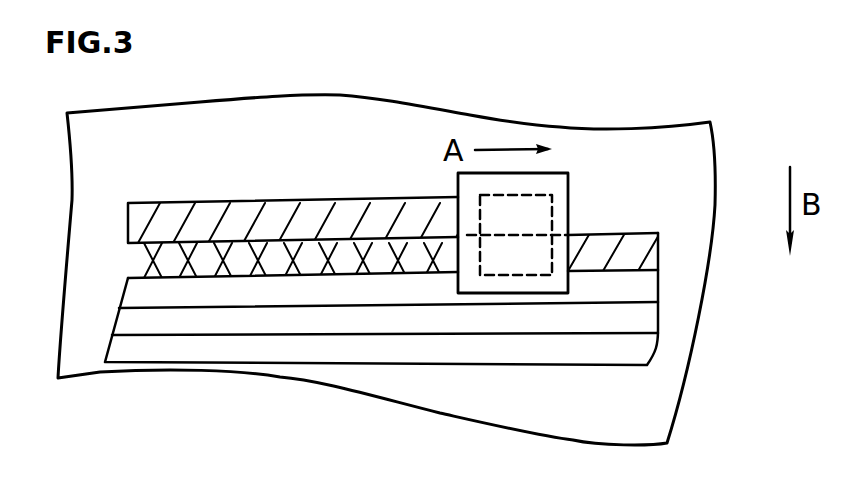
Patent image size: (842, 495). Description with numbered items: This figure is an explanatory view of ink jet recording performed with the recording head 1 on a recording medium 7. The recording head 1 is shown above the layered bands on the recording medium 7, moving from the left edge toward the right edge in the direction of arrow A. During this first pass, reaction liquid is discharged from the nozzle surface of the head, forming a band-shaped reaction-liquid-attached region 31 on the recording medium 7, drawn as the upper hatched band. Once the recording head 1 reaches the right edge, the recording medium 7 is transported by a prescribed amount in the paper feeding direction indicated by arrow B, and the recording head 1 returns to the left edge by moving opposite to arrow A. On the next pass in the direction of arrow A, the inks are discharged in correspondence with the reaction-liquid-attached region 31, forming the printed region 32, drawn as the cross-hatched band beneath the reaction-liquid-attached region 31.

The recording head 1 is at (560, 180).
The recording medium 7 is at (662, 413).
The reaction-liquid-attached region 31 is at (130, 225).
The printed region 32 is at (130, 263).